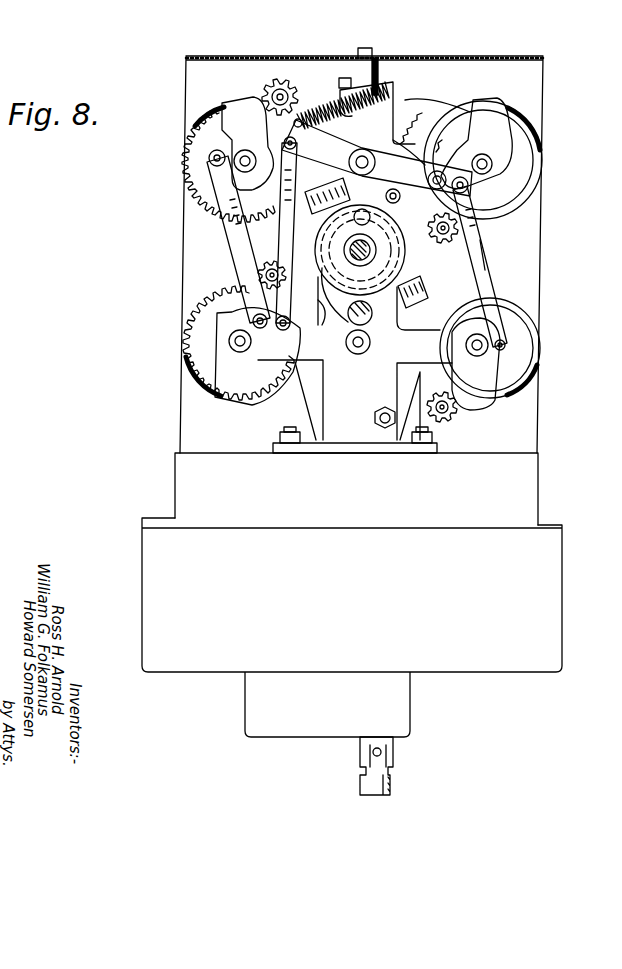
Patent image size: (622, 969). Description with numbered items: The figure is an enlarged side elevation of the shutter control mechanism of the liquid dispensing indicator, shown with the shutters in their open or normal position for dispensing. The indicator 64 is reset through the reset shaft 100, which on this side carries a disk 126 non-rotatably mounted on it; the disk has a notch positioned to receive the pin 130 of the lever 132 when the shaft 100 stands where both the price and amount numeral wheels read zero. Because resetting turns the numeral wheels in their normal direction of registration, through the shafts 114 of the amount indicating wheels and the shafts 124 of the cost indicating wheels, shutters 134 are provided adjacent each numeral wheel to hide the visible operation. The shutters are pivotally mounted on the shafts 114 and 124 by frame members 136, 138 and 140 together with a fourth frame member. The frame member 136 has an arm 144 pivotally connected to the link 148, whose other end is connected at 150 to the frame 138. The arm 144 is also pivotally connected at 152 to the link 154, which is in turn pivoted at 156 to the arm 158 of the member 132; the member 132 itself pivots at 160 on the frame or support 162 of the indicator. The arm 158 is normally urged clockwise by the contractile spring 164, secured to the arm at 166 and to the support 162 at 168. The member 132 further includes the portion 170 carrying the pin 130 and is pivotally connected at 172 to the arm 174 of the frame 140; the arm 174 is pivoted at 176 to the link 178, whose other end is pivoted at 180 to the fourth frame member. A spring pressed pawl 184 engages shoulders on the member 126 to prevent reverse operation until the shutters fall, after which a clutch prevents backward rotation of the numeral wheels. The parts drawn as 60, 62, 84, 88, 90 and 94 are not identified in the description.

The coupling stud 60 is at (395, 780).
The housing 62 is at (545, 605).
The indicator 64 is at (528, 483).
The lower left gear 84 is at (200, 336).
The lower right gear 88 is at (530, 377).
The upper left gear 90 is at (185, 138).
The upper right gear 94 is at (528, 155).
The reset shaft 100 is at (372, 252).
The shafts of the amount indicating wheels 114 is at (497, 340).
The shafts of the cost indicating wheels 124 is at (225, 160).
The disk 126 is at (398, 248).
The pin 130 is at (374, 165).
The lever 132 is at (420, 108).
The shutters 134 is at (200, 108).
The frame member 136 is at (228, 378).
The frame member 138 is at (218, 150).
The frame member 140 is at (493, 133).
The arm 144 is at (278, 328).
The link 148 is at (250, 238).
The pivotal connection 150 is at (222, 176).
The pivotal connection 152 is at (318, 306).
The link 154 is at (272, 260).
The pivotal connection 156 is at (270, 80).
The arm 158 is at (324, 98).
The pivot 160 is at (430, 108).
The frame or support 162 is at (335, 88).
The contractile spring 164 is at (372, 64).
The spring attachment point 166 is at (318, 97).
The spring attachment point 168 is at (391, 112).
The portion 170 is at (450, 110).
The pivotal connection 172 is at (487, 385).
The arm 174 is at (440, 150).
The pivotal connection 176 is at (470, 184).
The link 178 is at (495, 262).
The pivotal connection 180 is at (517, 357).
The spring pressed pawl 184 is at (320, 380).